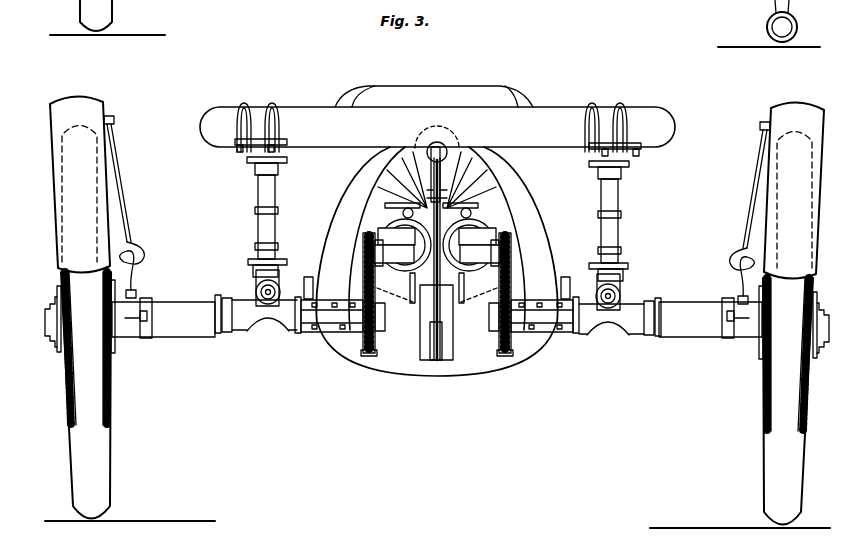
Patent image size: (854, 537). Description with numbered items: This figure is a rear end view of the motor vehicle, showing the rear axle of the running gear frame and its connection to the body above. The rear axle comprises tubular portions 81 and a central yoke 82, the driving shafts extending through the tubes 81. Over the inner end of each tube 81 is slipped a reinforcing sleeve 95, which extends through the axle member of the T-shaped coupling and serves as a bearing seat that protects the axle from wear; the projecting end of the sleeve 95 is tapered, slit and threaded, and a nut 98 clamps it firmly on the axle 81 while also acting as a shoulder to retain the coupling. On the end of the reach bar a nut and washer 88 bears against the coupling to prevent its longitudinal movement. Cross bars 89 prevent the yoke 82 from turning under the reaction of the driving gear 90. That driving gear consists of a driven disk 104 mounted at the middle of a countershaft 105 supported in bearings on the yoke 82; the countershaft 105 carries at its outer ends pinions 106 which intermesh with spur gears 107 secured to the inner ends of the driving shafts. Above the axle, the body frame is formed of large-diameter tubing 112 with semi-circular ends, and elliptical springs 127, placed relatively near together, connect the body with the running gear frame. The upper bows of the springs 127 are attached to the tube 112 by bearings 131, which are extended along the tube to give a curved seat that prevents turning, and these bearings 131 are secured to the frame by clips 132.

The tubular portions 81 is at (176, 305).
The central yoke 82 is at (510, 202).
The nut and washer 88 is at (256, 290).
The cross bars 89 is at (399, 294).
The driving gear 90 is at (437, 245).
The sleeve 95 is at (266, 325).
The nut 98 is at (221, 338).
The driven disk 104 is at (444, 293).
The countershaft 105 is at (482, 257).
The pinions 106 is at (362, 272).
The spur gears 107 is at (372, 357).
The body frame tubing 112 is at (437, 127).
The springs 127 is at (260, 206).
The bearings 131 is at (253, 152).
The clips 132 is at (250, 106).